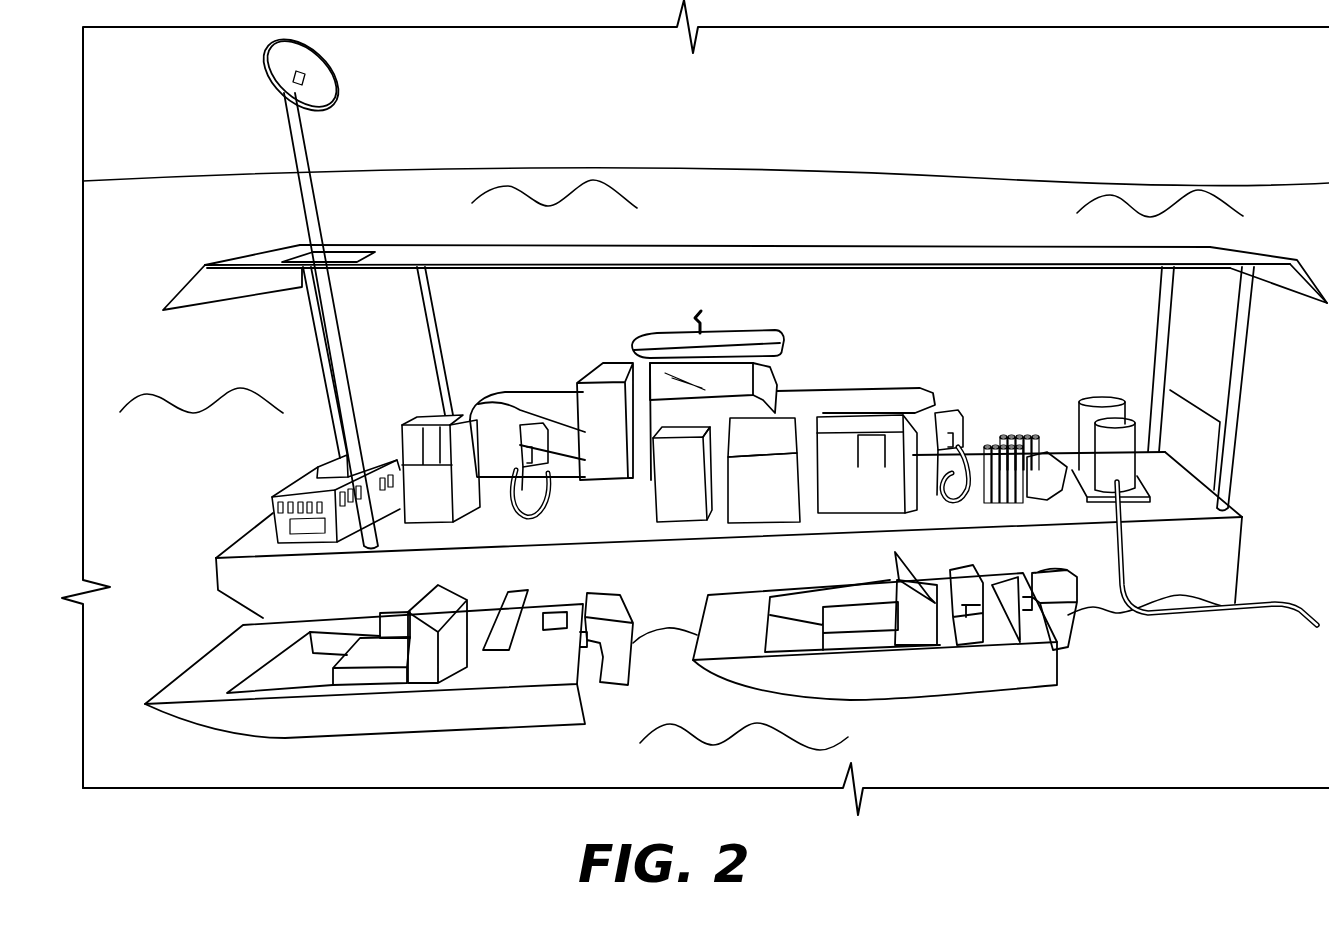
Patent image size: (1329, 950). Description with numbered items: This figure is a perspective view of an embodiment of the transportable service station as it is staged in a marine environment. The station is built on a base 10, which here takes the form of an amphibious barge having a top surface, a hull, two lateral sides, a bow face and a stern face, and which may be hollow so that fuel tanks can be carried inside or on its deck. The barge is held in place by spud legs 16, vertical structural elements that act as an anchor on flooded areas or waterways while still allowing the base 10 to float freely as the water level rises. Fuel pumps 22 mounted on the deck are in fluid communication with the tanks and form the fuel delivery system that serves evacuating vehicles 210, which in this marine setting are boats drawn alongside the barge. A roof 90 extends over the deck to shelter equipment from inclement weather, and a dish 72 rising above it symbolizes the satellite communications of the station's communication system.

The base 10 is at (247, 594).
The spud legs 16 is at (1160, 347).
The fuel pumps 22 is at (524, 424).
The dish 72 is at (317, 82).
The roof 90 is at (1005, 257).
The evacuating vehicles 210 is at (777, 370).